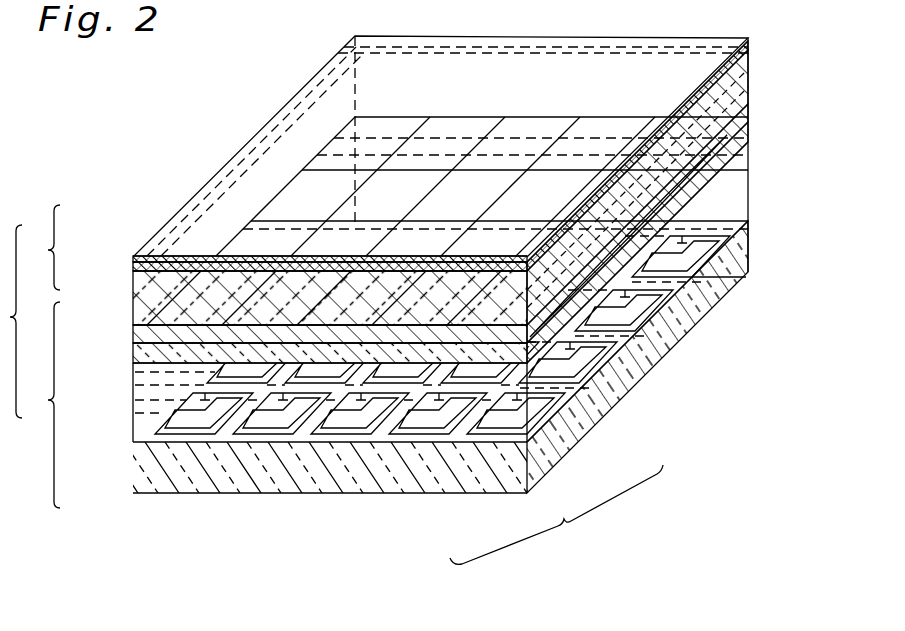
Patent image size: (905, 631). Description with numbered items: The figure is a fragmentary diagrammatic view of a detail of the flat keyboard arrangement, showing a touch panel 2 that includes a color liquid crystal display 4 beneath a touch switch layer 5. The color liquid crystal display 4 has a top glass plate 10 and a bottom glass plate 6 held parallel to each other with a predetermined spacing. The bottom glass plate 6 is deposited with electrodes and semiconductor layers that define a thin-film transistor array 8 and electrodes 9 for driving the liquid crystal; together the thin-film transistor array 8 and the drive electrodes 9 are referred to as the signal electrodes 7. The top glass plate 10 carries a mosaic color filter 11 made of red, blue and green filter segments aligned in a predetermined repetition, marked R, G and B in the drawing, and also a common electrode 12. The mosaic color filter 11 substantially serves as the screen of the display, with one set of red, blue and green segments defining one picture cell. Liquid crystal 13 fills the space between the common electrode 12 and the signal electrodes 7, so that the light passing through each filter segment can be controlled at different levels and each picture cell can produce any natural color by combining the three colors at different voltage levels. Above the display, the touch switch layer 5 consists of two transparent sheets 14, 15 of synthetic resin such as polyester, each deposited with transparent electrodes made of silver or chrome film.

The touch panel 2 is at (256, 126).
The color liquid crystal display 4 is at (379, 279).
The touch switch layer 5 is at (383, 165).
The bottom glass plate 6 is at (152, 463).
The signal electrodes 7 is at (442, 403).
The thin-film transistor array 8 is at (506, 401).
The electrodes 9 is at (639, 310).
The top glass plate 10 is at (143, 298).
The mosaic color filter 11 is at (143, 335).
The common electrode 12 is at (143, 357).
The liquid crystal 13 is at (143, 412).
The transparent sheet 14 is at (133, 258).
The transparent sheet 15 is at (133, 267).